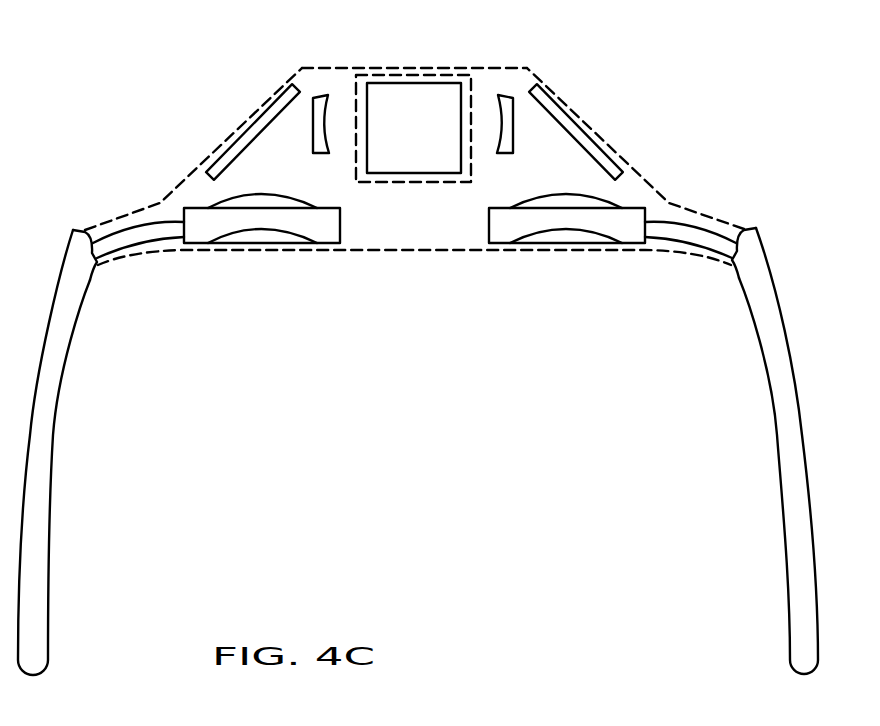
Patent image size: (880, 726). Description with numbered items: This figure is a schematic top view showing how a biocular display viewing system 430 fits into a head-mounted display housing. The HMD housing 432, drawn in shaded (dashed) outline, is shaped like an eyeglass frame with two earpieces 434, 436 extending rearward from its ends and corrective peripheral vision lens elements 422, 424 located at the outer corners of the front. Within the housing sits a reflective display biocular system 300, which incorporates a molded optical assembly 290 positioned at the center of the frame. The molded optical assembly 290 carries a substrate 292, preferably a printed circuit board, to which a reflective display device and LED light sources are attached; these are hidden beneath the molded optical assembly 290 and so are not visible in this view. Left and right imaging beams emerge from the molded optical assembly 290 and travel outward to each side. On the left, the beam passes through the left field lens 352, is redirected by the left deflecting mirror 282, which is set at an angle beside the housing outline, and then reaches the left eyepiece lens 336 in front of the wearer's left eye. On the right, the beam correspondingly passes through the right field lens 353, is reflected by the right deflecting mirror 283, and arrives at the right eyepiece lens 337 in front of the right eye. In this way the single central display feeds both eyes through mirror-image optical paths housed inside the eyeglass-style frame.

The reflective display biocular system 300 is at (477, 52).
The biocular display viewing system 430 is at (622, 55).
The molded optical assembly 290 is at (407, 83).
The substrate 292 is at (472, 178).
The left field lens 352 is at (319, 95).
The right field lens 353 is at (505, 95).
The left deflecting mirror 282 is at (262, 114).
The right deflecting mirror 283 is at (582, 128).
The HMD housing 432 is at (185, 185).
The corrective peripheral vision lens element 422 is at (127, 226).
The corrective peripheral vision lens element 424 is at (680, 222).
The left eyepiece lens 336 is at (195, 238).
The right eyepiece lens 337 is at (502, 238).
The earpiece 434 is at (42, 445).
The earpiece 436 is at (790, 440).